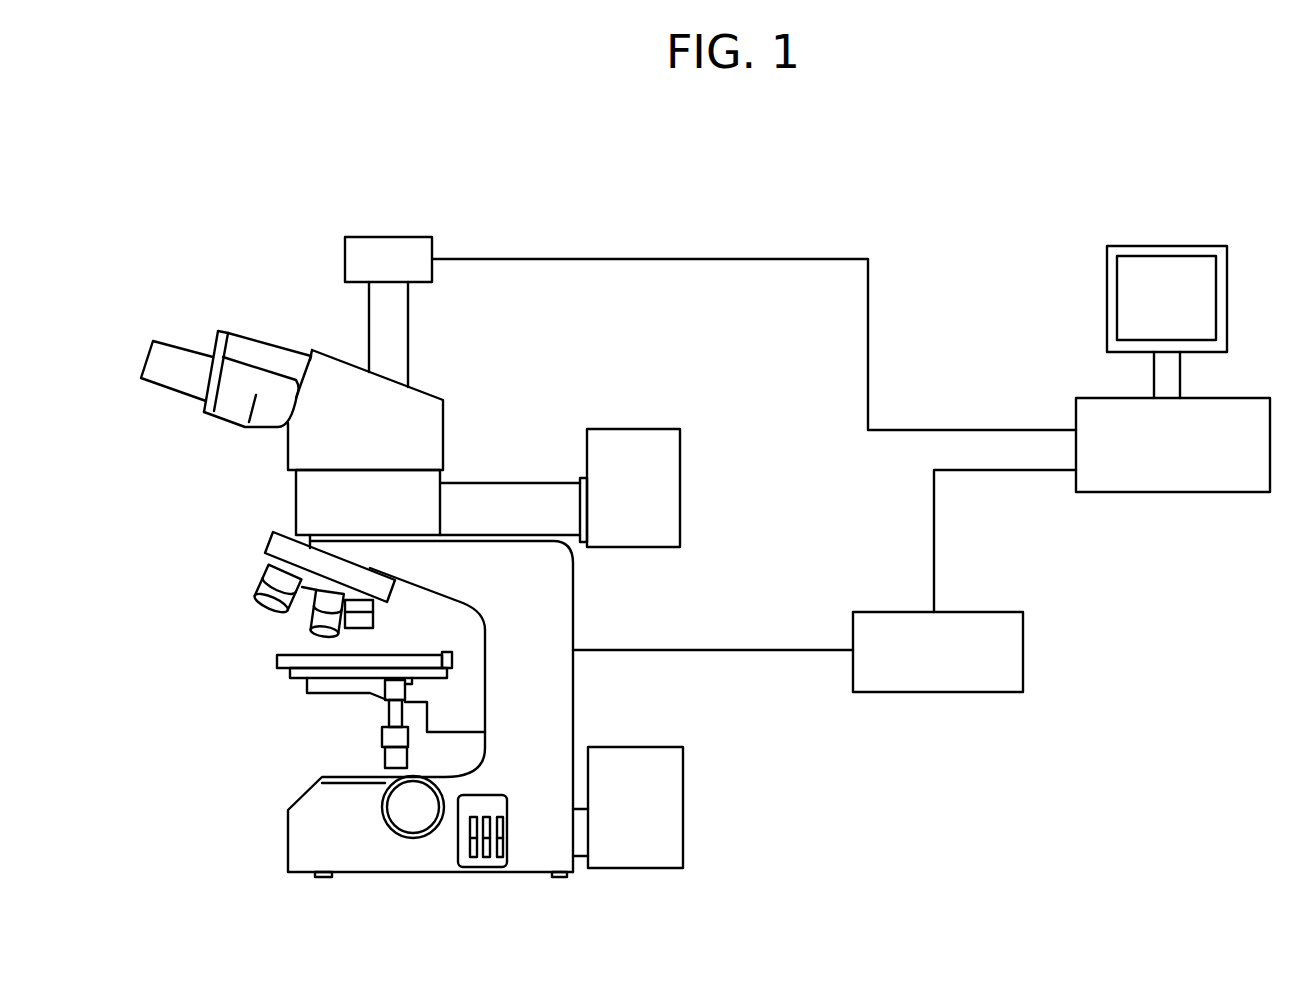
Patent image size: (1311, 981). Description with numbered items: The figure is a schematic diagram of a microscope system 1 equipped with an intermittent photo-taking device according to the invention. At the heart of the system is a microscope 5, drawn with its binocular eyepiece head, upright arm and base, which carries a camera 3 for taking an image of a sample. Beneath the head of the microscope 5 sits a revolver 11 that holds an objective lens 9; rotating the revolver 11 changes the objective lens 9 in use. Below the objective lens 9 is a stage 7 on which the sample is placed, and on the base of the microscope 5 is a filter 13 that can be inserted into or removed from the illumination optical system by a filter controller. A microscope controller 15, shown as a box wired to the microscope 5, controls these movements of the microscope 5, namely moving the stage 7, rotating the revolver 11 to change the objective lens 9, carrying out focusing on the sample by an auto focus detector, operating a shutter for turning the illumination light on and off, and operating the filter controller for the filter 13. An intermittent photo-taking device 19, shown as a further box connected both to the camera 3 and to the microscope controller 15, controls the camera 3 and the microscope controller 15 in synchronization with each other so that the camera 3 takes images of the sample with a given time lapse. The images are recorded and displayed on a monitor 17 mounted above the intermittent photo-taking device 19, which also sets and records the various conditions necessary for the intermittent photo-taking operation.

The microscope system 1 is at (712, 230).
The camera 3 is at (391, 243).
The microscope 5 is at (194, 311).
The stage 7 is at (280, 663).
The objective lens 9 is at (258, 598).
The revolver 11 is at (276, 540).
The filter 13 is at (481, 861).
The microscope controller 15 is at (940, 678).
The monitor 17 is at (1205, 292).
The intermittent photo-taking device 19 is at (1178, 472).